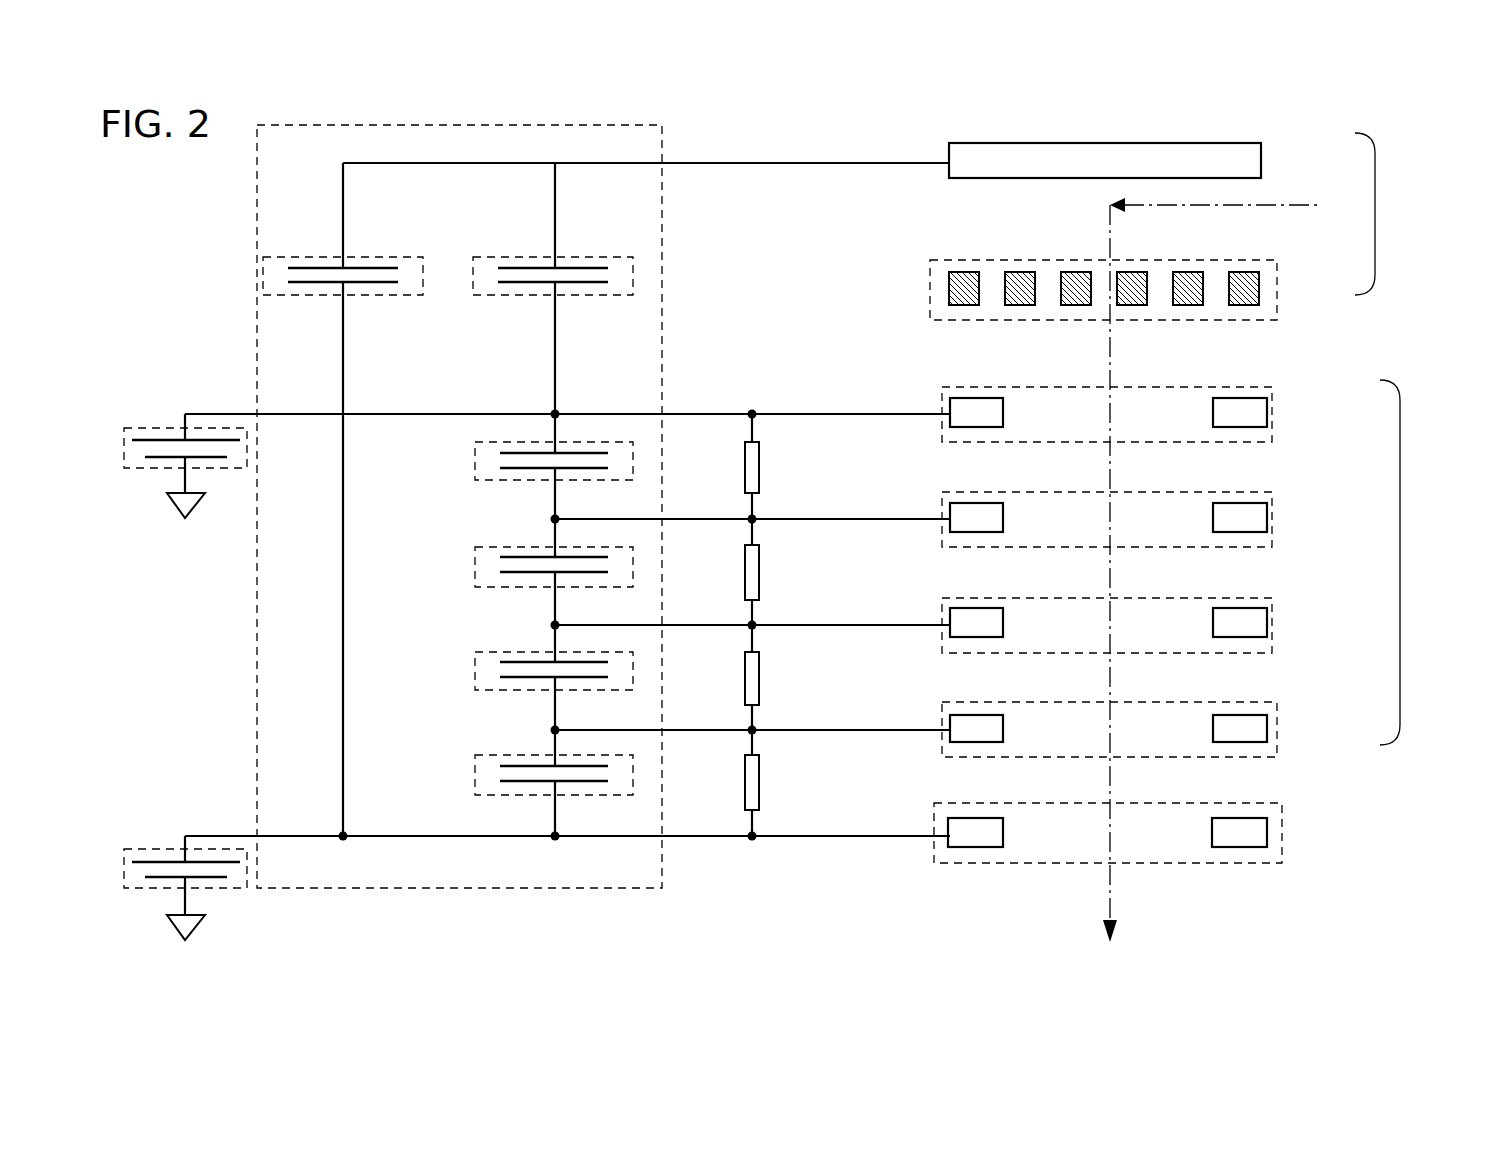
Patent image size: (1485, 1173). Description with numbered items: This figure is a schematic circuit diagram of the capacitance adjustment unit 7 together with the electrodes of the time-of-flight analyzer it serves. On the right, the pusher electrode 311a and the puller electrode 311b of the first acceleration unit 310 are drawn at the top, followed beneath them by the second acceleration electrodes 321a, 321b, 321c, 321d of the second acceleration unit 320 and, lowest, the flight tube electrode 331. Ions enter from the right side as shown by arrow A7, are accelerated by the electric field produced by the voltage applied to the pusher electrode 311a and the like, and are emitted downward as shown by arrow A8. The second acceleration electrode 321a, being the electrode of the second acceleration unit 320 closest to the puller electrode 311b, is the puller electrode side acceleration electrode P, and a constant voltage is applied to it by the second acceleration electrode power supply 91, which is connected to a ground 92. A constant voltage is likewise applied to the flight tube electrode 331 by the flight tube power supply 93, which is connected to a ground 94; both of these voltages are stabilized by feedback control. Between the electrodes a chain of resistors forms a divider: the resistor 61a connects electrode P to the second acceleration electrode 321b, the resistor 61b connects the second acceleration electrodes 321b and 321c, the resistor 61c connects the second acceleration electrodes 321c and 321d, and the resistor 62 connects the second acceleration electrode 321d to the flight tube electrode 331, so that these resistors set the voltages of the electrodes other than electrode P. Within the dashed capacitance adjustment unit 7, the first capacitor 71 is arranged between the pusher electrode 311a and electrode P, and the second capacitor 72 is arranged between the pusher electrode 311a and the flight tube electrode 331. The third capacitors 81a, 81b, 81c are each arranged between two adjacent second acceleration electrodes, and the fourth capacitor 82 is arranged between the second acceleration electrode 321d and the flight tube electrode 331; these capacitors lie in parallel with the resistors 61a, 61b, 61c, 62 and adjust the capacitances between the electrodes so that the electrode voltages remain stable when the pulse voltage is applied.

The capacitance adjustment unit 7 is at (648, 129).
The first capacitor 71 is at (582, 256).
The second capacitor 72 is at (372, 256).
The third capacitor 81a is at (490, 466).
The third capacitor 81b is at (490, 571).
The third capacitor 81c is at (490, 674).
The fourth capacitor 82 is at (492, 773).
The resistor 61a is at (753, 481).
The resistor 61b is at (753, 586).
The resistor 61c is at (753, 690).
The resistor 62 is at (753, 796).
The second acceleration electrode power supply 91 is at (143, 428).
The GND 92 is at (178, 503).
The flight tube power supply 93 is at (143, 849).
The GND 94 is at (177, 909).
The first acceleration unit 310 is at (1375, 215).
The pusher electrode 311a is at (1250, 172).
The puller electrode 311b is at (1267, 285).
The second acceleration unit 320 is at (1400, 562).
The second acceleration electrode 321a is at (1318, 426).
The second acceleration electrode 321b is at (1253, 527).
The second acceleration electrode 321c is at (1253, 633).
The second acceleration electrode 321d is at (1253, 738).
The flight tube electrode 331 is at (1253, 843).
The arrow A7 is at (1193, 206).
The arrow A8 is at (1113, 897).